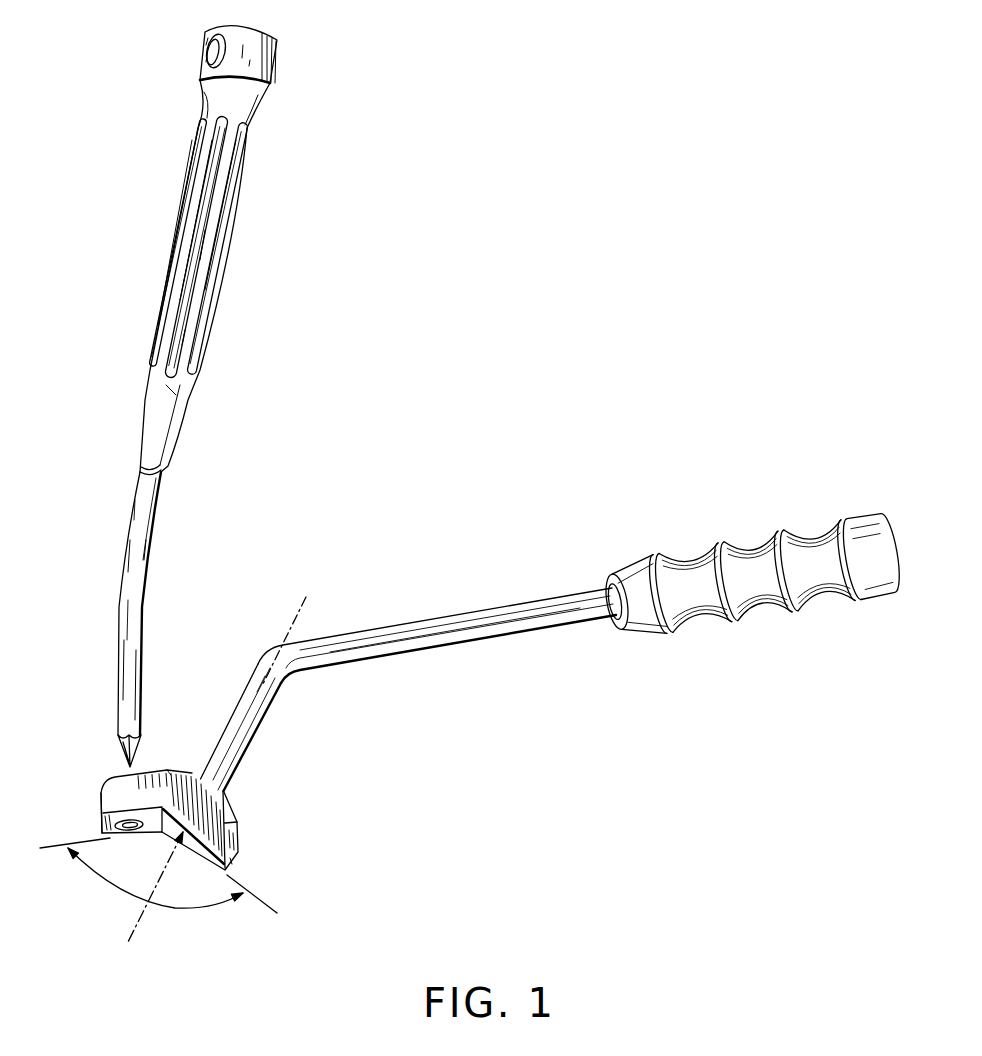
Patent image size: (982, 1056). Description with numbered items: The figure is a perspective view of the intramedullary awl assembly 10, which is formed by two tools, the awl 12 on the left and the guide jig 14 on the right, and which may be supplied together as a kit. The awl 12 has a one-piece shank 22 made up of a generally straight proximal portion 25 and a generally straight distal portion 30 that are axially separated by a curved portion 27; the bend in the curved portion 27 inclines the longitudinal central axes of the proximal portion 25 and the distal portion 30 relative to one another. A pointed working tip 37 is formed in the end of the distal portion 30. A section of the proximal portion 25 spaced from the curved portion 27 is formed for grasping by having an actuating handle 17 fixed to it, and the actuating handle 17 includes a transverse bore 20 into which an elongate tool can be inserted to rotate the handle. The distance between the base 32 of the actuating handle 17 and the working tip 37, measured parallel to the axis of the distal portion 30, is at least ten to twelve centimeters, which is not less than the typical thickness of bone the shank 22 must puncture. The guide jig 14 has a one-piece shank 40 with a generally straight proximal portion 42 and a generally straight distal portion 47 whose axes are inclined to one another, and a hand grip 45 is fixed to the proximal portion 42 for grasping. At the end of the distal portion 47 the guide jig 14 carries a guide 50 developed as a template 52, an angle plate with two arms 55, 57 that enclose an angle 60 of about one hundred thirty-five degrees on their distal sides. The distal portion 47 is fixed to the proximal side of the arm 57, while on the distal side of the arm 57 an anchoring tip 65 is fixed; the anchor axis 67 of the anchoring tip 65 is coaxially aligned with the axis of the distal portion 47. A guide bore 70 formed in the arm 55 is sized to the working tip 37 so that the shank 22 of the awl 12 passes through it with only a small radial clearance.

The intramedullary awl assembly 10 is at (336, 414).
The awl 12 is at (236, 275).
The guide jig 14 is at (542, 578).
The actuating handle 17 is at (168, 232).
The transverse bore 20 is at (207, 50).
The shank 22 is at (162, 540).
The proximal portion 25 is at (125, 526).
The curved portion 27 is at (120, 576).
The distal portion 30 is at (118, 676).
The base 32 is at (141, 470).
The working tip 37 is at (123, 762).
The shank 40 is at (477, 600).
The proximal portion 42 is at (523, 632).
The hand grip 45 is at (752, 620).
The distal portion 47 is at (249, 738).
The guide 50 is at (237, 797).
The template 52 is at (170, 757).
The arm 55 is at (100, 797).
The arm 57 is at (240, 860).
The angle 60 is at (180, 908).
The anchoring tip 65 is at (167, 841).
The anchor axis 67 is at (300, 617).
The guide bore 70 is at (104, 835).